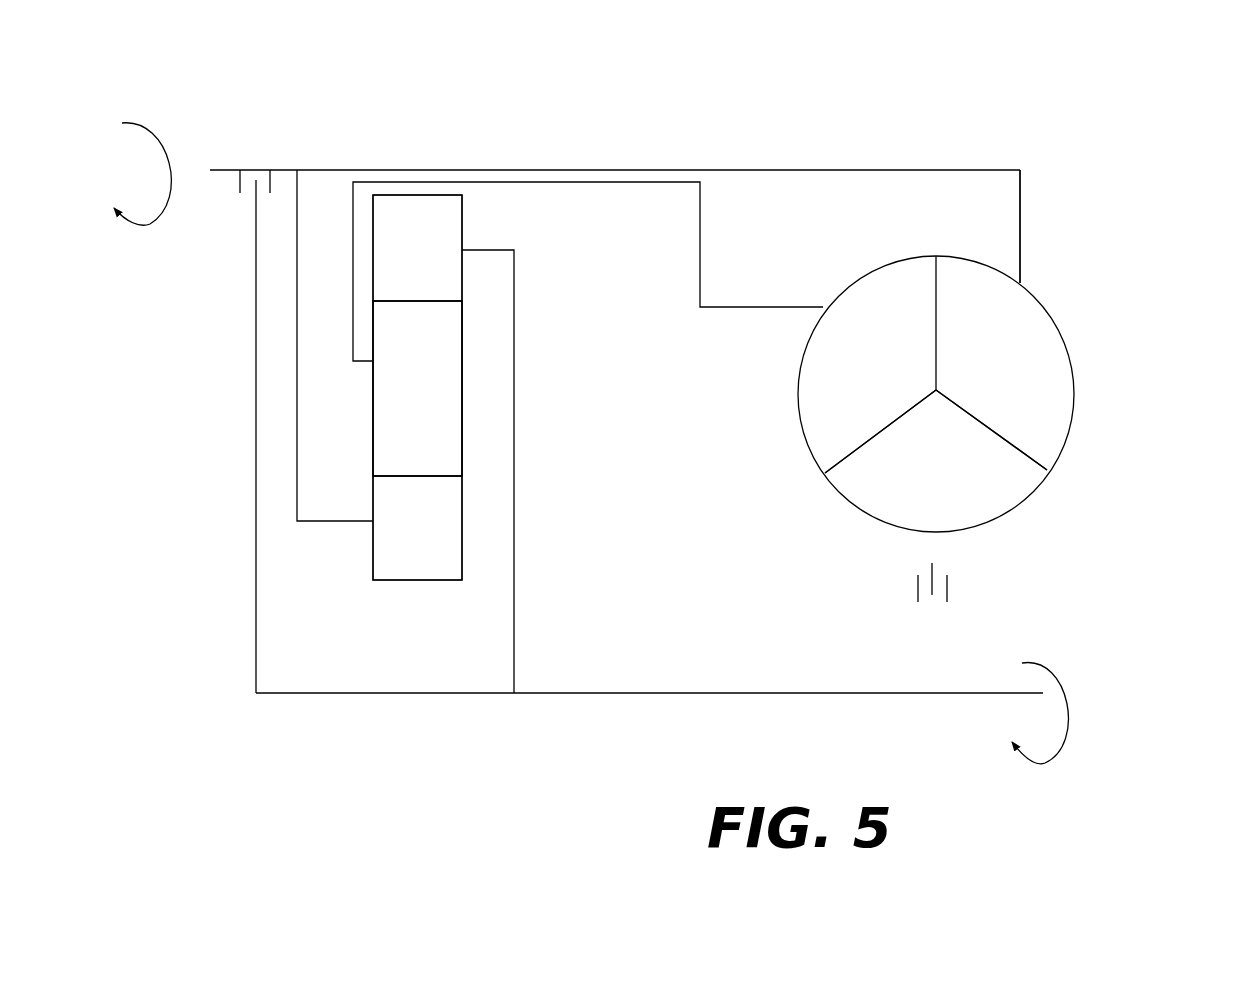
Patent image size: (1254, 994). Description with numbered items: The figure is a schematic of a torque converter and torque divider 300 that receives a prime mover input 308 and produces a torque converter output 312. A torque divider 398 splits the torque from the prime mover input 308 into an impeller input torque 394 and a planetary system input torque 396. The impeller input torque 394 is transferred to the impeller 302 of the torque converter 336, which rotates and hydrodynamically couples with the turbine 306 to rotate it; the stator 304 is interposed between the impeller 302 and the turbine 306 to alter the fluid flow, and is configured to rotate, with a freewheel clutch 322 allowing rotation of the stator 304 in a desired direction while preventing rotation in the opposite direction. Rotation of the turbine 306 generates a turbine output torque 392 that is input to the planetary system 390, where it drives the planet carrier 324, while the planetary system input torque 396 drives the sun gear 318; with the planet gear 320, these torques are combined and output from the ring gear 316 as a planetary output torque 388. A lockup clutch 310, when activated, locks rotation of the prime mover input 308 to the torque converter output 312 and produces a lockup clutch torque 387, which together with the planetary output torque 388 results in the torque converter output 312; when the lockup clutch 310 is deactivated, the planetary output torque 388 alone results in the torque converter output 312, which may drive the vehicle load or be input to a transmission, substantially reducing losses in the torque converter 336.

The torque converter and torque divider 300 is at (1018, 136).
The impeller 302 is at (982, 405).
The stator 304 is at (913, 510).
The turbine 306 is at (842, 405).
The prime mover input 308 is at (150, 174).
The lockup clutch 310 is at (246, 193).
The torque converter output 312 is at (1122, 712).
The ring gear 316 is at (395, 291).
The sun gear 318 is at (395, 563).
The planet gear 320 is at (392, 437).
The freewheel clutch 322 is at (923, 607).
The planet carrier 324 is at (395, 465).
The torque converter 336 is at (1040, 323).
The lockup clutch torque 387 is at (256, 547).
The planetary output torque 388 is at (514, 626).
The planetary system 390 is at (486, 390).
The turbine output torque 392 is at (700, 240).
The impeller input torque 394 is at (1020, 222).
The planetary system input torque 396 is at (296, 523).
The torque divider 398 is at (338, 169).